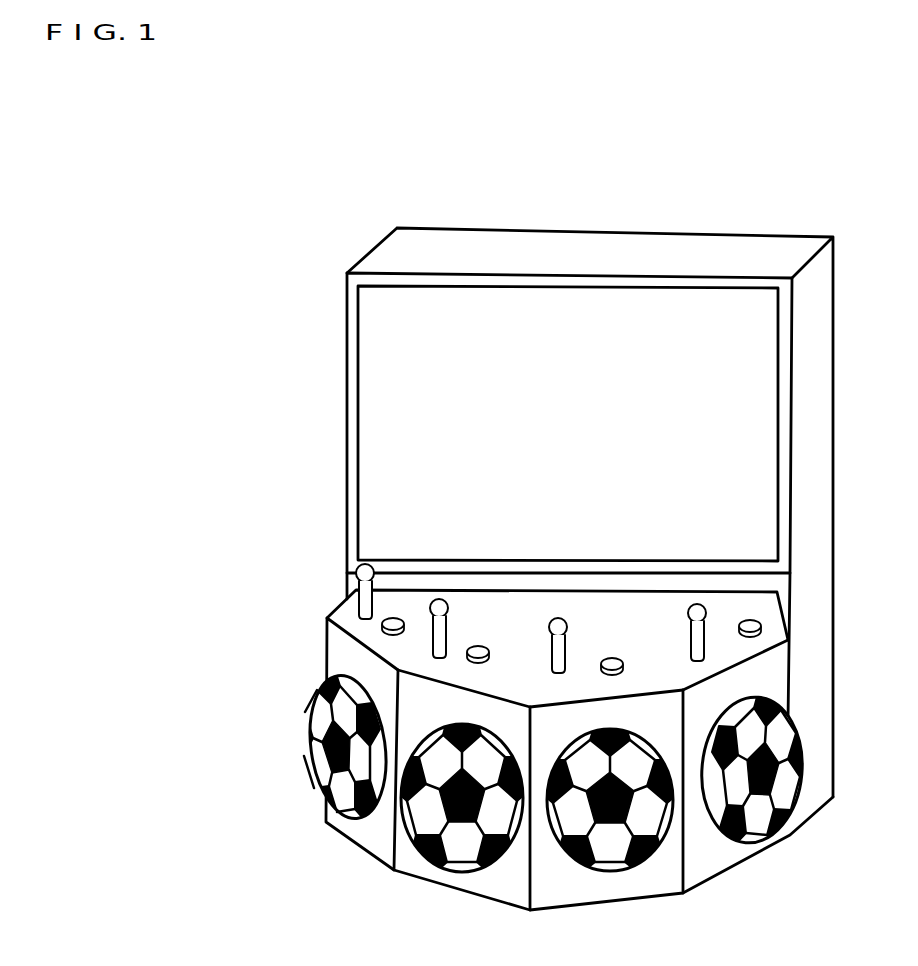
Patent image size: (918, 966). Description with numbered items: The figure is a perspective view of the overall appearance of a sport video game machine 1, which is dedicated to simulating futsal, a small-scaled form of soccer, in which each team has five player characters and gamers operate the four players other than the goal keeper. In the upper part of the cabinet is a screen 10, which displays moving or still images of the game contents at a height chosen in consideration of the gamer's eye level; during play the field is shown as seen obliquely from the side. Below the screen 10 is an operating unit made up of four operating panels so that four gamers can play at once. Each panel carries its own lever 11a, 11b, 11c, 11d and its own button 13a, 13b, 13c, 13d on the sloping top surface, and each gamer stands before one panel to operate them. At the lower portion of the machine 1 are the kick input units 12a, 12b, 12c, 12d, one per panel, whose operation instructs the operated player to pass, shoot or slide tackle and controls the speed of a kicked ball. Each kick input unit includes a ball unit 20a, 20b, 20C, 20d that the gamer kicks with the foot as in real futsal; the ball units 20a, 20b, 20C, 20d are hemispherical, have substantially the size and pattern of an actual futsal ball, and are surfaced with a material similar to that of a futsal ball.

The sport video game machine 1 is at (572, 194).
The screen 10 is at (372, 385).
The lever 11a is at (363, 598).
The lever 11b is at (446, 631).
The lever 11c is at (565, 640).
The lever 11d is at (705, 638).
The button 13a is at (382, 633).
The button 13b is at (487, 650).
The button 13c is at (617, 657).
The button 13d is at (762, 626).
The kick input unit 12a is at (317, 760).
The kick input unit 12b is at (453, 860).
The kick input unit 12c is at (612, 863).
The kick input unit 12d is at (757, 845).
The ball unit 20a is at (317, 787).
The ball unit 20b is at (490, 860).
The ball unit 20C is at (650, 860).
The ball unit 20d is at (770, 843).